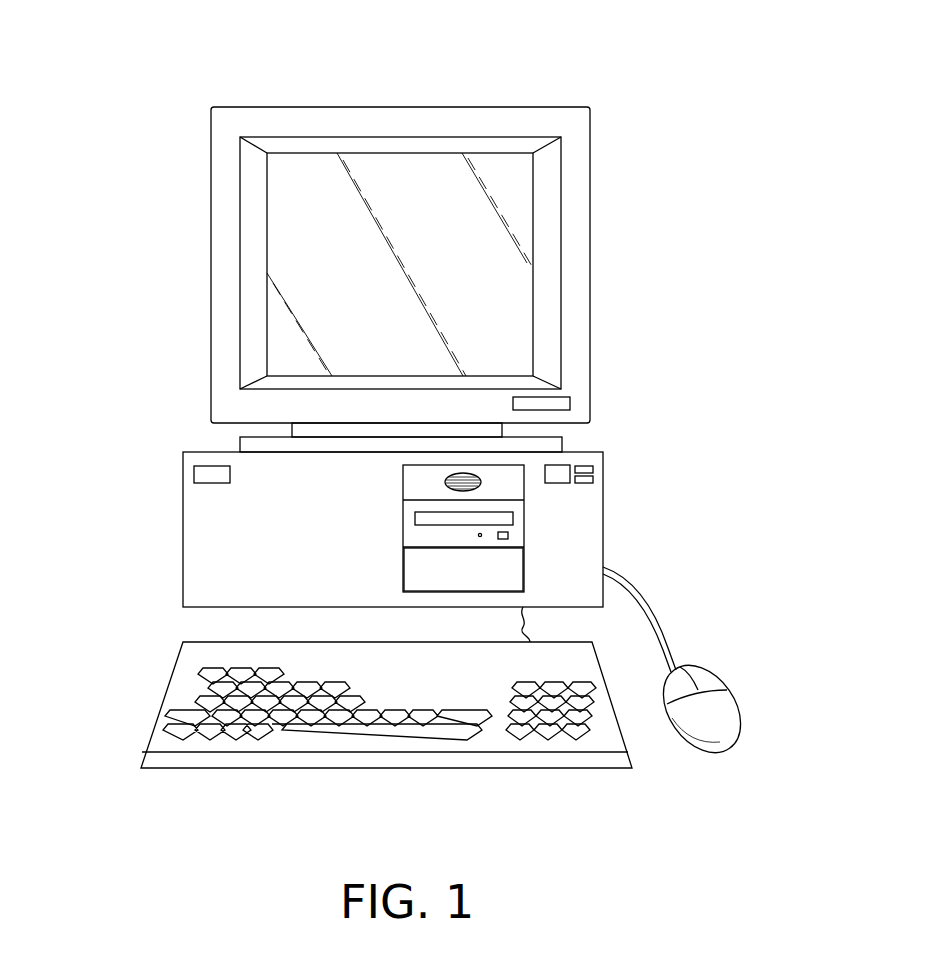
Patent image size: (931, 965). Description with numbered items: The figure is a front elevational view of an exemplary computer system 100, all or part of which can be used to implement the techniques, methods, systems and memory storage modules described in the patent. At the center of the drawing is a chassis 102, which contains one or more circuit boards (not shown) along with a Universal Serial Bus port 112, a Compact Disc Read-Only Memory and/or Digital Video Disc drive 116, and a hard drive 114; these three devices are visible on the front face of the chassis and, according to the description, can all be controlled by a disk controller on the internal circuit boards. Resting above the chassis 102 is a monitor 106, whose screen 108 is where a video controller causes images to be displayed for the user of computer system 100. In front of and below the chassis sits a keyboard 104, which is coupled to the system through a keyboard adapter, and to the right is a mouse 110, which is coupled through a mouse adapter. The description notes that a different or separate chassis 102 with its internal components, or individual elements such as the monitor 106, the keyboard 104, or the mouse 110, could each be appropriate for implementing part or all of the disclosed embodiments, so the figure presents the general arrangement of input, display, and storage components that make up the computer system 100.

The computer system 100 is at (587, 80).
The chassis 102 is at (183, 530).
The keyboard 104 is at (163, 696).
The monitor 106 is at (288, 107).
The screen 108 is at (316, 269).
The mouse 110 is at (727, 689).
The Universal Serial Bus (USB) port 112 is at (484, 481).
The hard drive 114 is at (515, 566).
The Compact Disc Read-Only Memory (CD-ROM) and/or Digital Video Disc (DVD) drive 116 is at (523, 526).